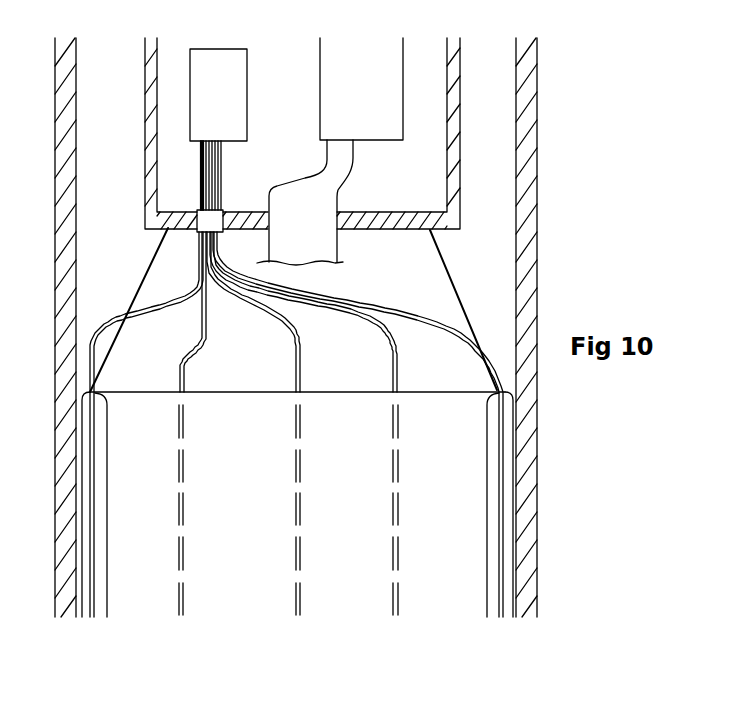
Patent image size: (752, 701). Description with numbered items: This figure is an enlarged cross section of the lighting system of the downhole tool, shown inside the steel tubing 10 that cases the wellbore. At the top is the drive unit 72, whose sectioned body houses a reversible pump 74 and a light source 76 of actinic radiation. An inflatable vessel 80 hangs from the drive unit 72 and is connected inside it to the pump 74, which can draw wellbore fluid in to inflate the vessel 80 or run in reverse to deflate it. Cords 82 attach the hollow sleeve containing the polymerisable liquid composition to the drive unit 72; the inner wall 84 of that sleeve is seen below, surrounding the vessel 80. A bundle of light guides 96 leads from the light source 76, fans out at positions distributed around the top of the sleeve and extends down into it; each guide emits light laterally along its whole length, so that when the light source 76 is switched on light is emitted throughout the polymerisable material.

The steel tubing 10 is at (527, 66).
The drive unit 72 is at (455, 92).
The reversible pump 74 is at (372, 122).
The light source 76 is at (213, 100).
The inflatable vessel 80 is at (317, 182).
The cords 82 is at (460, 288).
The inner wall 84 is at (487, 470).
The light guides 96 is at (137, 320).